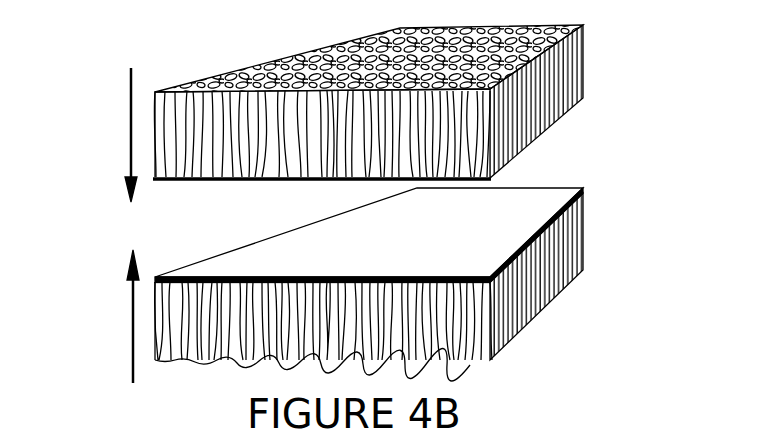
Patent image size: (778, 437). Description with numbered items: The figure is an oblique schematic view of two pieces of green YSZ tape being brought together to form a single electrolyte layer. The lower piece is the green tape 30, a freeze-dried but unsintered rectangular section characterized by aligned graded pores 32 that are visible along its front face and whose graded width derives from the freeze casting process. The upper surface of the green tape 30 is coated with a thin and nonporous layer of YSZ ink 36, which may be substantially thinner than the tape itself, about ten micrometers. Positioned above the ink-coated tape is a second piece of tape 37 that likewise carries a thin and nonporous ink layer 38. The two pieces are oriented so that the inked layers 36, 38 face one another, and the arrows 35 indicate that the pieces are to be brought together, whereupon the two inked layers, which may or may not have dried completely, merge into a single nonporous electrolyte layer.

The green tape 30 is at (375, 270).
The graded pores 32 is at (319, 332).
The arrows 35 is at (130, 307).
The layer of YSZ ink 36 is at (518, 223).
The second piece of tape 37 is at (583, 62).
The ink layer 38 is at (438, 90).